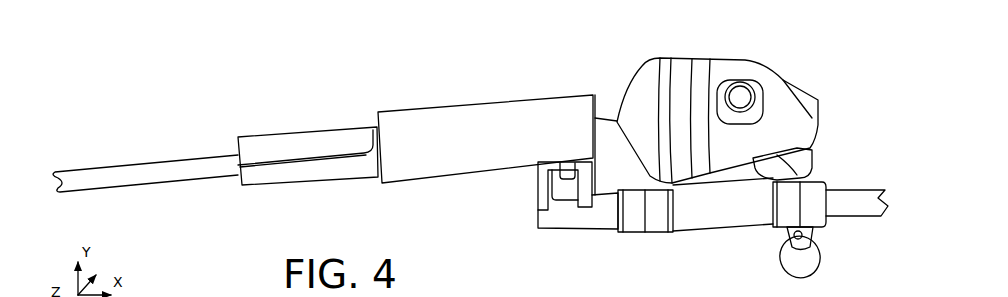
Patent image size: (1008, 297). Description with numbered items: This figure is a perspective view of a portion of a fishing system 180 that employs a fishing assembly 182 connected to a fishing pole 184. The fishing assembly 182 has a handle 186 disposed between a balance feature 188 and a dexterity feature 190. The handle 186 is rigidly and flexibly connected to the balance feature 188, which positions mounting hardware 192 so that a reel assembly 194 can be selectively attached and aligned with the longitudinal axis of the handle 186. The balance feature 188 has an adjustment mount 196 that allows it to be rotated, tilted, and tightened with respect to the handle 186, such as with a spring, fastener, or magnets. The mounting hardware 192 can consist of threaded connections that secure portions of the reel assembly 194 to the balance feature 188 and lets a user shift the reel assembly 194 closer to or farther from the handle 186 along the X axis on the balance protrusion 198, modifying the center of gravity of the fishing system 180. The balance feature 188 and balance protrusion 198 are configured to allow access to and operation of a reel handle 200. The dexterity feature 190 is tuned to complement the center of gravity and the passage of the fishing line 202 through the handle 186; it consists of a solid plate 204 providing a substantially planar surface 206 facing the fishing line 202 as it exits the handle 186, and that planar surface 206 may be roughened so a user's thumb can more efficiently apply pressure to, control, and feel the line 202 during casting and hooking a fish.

The fishing system 180 is at (181, 59).
The fishing assembly 182 is at (455, 197).
The fishing pole 184 is at (137, 185).
The handle 186 is at (508, 148).
The balance feature 188 is at (552, 240).
The dexterity feature 190 is at (280, 110).
The mounting hardware 192 is at (808, 185).
The reel assembly 194 is at (775, 63).
The adjustment mount 196 is at (538, 181).
The balance protrusion 198 is at (711, 228).
The reel handle 200 is at (781, 254).
The fishing line 202 is at (607, 115).
The solid plate 204 is at (364, 177).
The planar surface 206 is at (313, 133).